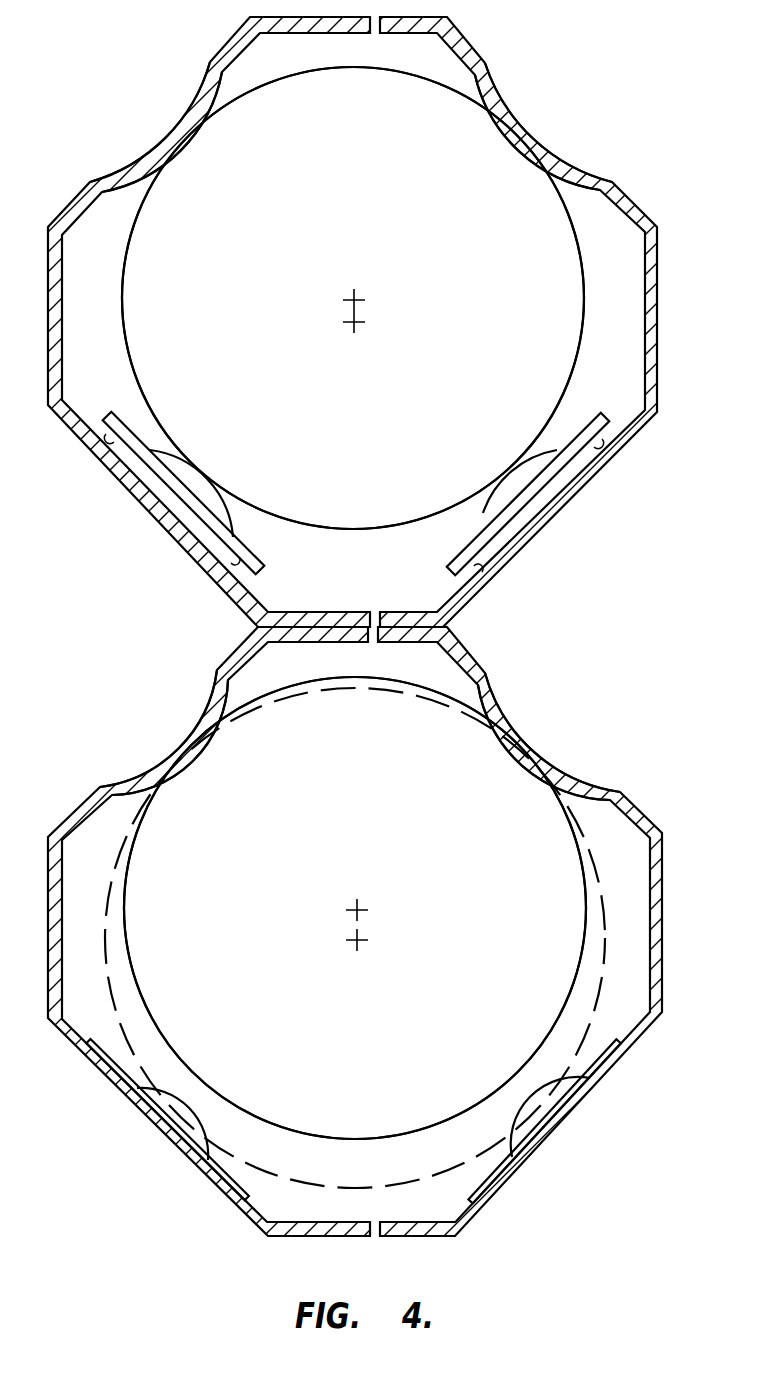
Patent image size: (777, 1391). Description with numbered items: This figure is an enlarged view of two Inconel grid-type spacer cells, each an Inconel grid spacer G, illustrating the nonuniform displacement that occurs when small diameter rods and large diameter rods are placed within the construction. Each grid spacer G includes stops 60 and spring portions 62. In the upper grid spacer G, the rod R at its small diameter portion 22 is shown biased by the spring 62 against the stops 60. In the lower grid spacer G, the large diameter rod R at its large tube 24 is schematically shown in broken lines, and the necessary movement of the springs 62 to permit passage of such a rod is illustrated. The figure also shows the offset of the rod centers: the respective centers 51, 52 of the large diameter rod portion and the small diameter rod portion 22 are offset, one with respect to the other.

The Inconel grid-type spacer G is at (597, 174).
The stops 60 is at (175, 133).
The rod R is at (345, 436).
The small diameter portion 22 is at (585, 305).
The large tube 24 is at (603, 965).
The spring portions 62 is at (145, 513).
The center of small diameter rod portion 52 is at (352, 297).
The center of large diameter rod portion 51 is at (350, 324).